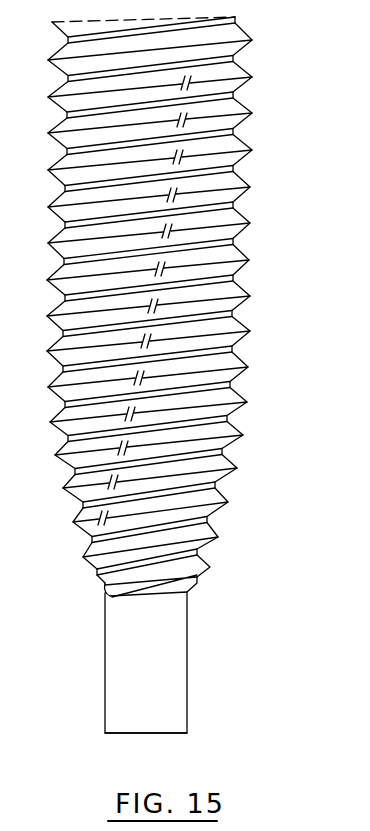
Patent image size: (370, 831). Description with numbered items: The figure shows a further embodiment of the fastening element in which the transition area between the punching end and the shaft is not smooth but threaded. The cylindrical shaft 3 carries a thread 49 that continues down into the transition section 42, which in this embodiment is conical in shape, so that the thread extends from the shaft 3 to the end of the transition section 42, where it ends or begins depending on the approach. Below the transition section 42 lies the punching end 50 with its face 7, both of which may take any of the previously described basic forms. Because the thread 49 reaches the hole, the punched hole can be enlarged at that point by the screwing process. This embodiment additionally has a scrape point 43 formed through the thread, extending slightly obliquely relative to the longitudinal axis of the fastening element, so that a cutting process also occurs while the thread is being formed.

The shaft 3 is at (218, 316).
The scrape point 43 is at (212, 158).
The thread 49 is at (233, 371).
The transition section 42 is at (263, 435).
The punching end 50 is at (218, 648).
The face 7 is at (185, 735).